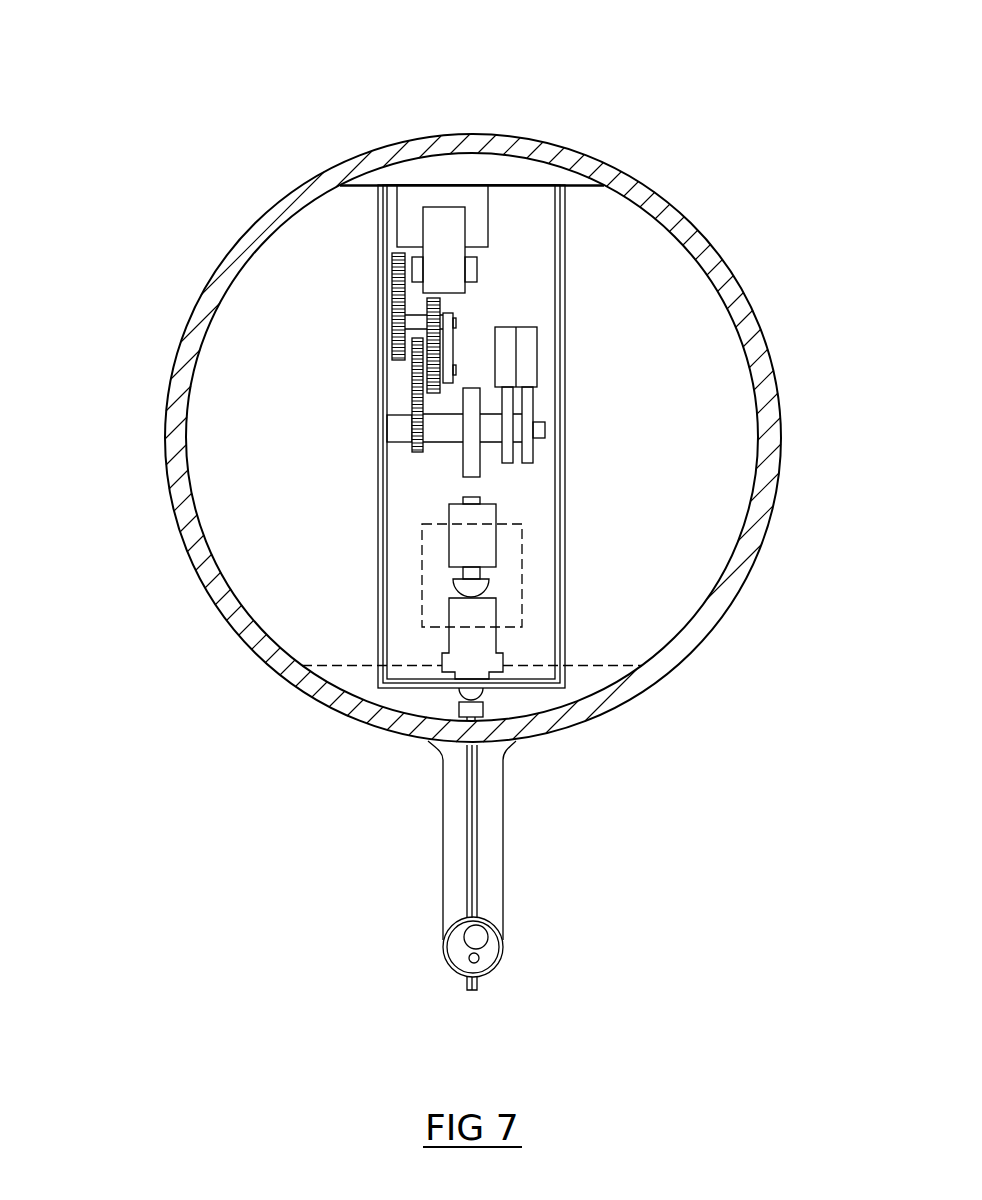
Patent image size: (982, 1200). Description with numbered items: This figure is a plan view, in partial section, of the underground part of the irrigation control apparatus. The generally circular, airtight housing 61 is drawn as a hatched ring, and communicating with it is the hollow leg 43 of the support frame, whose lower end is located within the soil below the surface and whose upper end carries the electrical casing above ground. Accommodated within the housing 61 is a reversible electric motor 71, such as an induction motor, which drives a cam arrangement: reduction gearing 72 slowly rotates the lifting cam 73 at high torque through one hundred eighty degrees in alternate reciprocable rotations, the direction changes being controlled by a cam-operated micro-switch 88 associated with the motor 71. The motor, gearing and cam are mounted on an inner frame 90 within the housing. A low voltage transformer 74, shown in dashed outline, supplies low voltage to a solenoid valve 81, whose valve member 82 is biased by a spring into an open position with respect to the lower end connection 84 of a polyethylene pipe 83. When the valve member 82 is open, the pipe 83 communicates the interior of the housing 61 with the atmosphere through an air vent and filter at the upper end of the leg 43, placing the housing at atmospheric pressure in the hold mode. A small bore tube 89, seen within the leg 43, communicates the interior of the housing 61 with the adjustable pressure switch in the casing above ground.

The reversible electric motor 71 is at (443, 227).
The reduction gearing 72 is at (417, 388).
The lifting cam 73 is at (470, 437).
The cam-operated micro-switch 88 is at (530, 343).
The airtight housing 61 is at (768, 512).
The support frame 90 is at (565, 530).
The solenoid valve 81 is at (463, 548).
The valve member 82 is at (465, 650).
The low voltage transformer 74 is at (523, 596).
The lower end connection 84 is at (452, 592).
The hollow leg 43 is at (488, 822).
The polyethylene pipe 83 is at (469, 937).
The small bore tube 89 is at (480, 957).